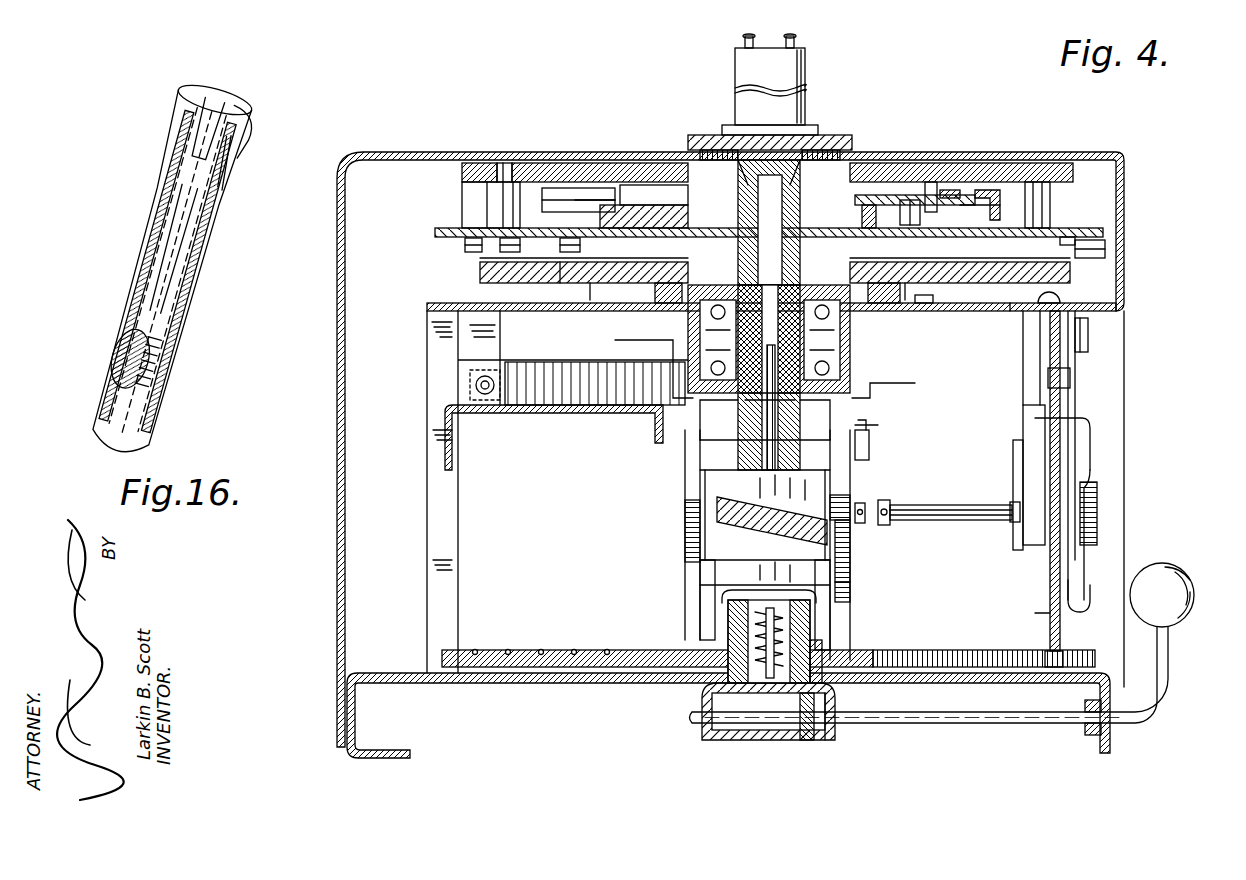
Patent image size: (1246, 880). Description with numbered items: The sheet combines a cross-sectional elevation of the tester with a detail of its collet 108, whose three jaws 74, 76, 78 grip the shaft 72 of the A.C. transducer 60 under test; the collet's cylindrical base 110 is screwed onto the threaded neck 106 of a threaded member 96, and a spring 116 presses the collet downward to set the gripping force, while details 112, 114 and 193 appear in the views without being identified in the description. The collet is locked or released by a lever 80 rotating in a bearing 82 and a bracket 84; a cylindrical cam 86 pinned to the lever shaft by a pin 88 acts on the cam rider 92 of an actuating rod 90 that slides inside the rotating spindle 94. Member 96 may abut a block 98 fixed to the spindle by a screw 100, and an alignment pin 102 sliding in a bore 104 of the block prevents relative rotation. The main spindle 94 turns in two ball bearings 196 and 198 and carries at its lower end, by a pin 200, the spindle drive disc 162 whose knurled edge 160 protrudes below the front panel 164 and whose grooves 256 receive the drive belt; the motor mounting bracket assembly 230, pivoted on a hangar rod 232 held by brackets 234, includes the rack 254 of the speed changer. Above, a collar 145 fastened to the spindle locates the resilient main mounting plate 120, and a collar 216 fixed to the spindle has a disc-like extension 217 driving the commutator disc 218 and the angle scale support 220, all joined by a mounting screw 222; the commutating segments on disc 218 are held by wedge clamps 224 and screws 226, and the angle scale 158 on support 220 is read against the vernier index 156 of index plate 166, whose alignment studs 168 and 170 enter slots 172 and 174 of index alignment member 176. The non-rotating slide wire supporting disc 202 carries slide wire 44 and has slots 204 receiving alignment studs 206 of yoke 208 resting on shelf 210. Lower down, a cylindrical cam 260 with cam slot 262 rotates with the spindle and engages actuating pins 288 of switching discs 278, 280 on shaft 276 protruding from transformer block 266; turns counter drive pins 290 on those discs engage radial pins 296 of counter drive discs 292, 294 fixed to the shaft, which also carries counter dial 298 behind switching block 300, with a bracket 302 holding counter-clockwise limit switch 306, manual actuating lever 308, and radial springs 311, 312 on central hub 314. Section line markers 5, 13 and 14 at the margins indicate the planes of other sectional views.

In FIG. 16, the section line 5 is at (273, 340).
In FIG. 4, the section line 5 is at (1195, 380).
In FIG. 4, the section line 13 is at (360, 227).
In FIG. 16, the section line 14 is at (285, 240).
In FIG. 4, the section line 14 is at (1180, 247).
In FIG. 4, the slide wire 44 is at (485, 266).
In FIG. 4, the A.C. transducer 60 is at (745, 63).
In FIG. 4, the shaft 72 is at (748, 160).
In FIG. 16, the collet jaw 74 is at (262, 118).
In FIG. 4, the collet jaw 74 is at (826, 140).
In FIG. 16, the collet jaw 76 is at (245, 167).
In FIG. 4, the collet jaw 76 is at (738, 150).
In FIG. 16, the collet jaw 78 is at (213, 92).
In FIG. 4, the lever 80 is at (956, 724).
In FIG. 4, the bearing 82 is at (1093, 736).
In FIG. 4, the bracket 84 is at (838, 735).
In FIG. 4, the cylindrical cam 86 is at (742, 740).
In FIG. 4, the pin 88 is at (812, 740).
In FIG. 4, the actuating rod 90 is at (728, 622).
In FIG. 4, the cam rider 92 is at (703, 696).
In FIG. 4, the main spindle 94 is at (835, 625).
In FIG. 4, the threaded member 96 is at (715, 347).
In FIG. 4, the block 98 is at (745, 402).
In FIG. 4, the screw 100 is at (735, 422).
In FIG. 4, the alignment pin 102 is at (822, 400).
In FIG. 4, the bore 104 is at (832, 412).
In FIG. 4, the threaded neck 106 is at (702, 324).
In FIG. 16, the collet 108 is at (133, 234).
In FIG. 4, the collet 108 is at (838, 336).
In FIG. 16, the cylindrical base 110 is at (100, 362).
In FIG. 16, the slot 112 is at (196, 293).
In FIG. 4, the motor flange 114 is at (815, 150).
In FIG. 4, the spring 116 is at (728, 594).
In FIG. 4, the main mounting plate 120 is at (1035, 182).
In FIG. 4, the collar 145 is at (660, 165).
In FIG. 4, the vernier index 156 is at (985, 190).
In FIG. 4, the angle scale 158 is at (560, 152).
In FIG. 4, the knurled edge 160 is at (1098, 660).
In FIG. 4, the spindle drive disc 162 is at (526, 650).
In FIG. 4, the front panel 164 is at (1050, 575).
In FIG. 4, the index plate 166 is at (952, 190).
In FIG. 4, the alignment stud 168 is at (895, 210).
In FIG. 4, the alignment stud 170 is at (625, 210).
In FIG. 4, the slot 172 is at (930, 182).
In FIG. 4, the slot 174 is at (600, 189).
In FIG. 4, the index alignment member 176 is at (880, 195).
In FIG. 4, the cup 193 is at (625, 372).
In FIG. 4, the ball bearing 196 is at (655, 295).
In FIG. 4, the ball bearing 198 is at (852, 367).
In FIG. 4, the pin 200 is at (825, 642).
In FIG. 4, the slide wire supporting disc 202 is at (552, 285).
In FIG. 4, the slots 204 is at (926, 303).
In FIG. 4, the alignment stud 206 is at (612, 311).
In FIG. 4, the alignment yoke 208 is at (590, 302).
In FIG. 4, the shelf 210 is at (448, 303).
In FIG. 4, the collar 216 is at (690, 163).
In FIG. 4, the disc-like extension 217 is at (545, 188).
In FIG. 4, the commutator disc 218 is at (460, 228).
In FIG. 4, the angle scale support 220 is at (575, 206).
In FIG. 4, the mounting screw 222 is at (868, 215).
In FIG. 4, the wedge clamp 224 is at (468, 244).
In FIG. 4, the screw 226 is at (1100, 257).
In FIG. 4, the mounting bracket assembly 230 is at (525, 413).
In FIG. 4, the hangar rod 232 is at (475, 386).
In FIG. 4, the brackets 234 is at (470, 344).
In FIG. 4, the rack 254 is at (685, 427).
In FIG. 4, the grooves 256 is at (476, 650).
In FIG. 4, the cylindrical cam 260 is at (852, 486).
In FIG. 4, the cam slot 262 is at (838, 548).
In FIG. 4, the transformer block 266 is at (715, 500).
In FIG. 4, the shaft 276 is at (952, 505).
In FIG. 4, the switching disc 278 is at (700, 572).
In FIG. 4, the switching disc 280 is at (830, 584).
In FIG. 4, the actuating pins 288 is at (688, 526).
In FIG. 4, the turns counter drive pins 290 is at (869, 446).
In FIG. 4, the turns counter drive disc 292 is at (705, 472).
In FIG. 4, the turns counter drive disc 294 is at (852, 590).
In FIG. 4, the radial pin 296 is at (870, 428).
In FIG. 4, the counter dial 298 is at (1073, 402).
In FIG. 4, the switching block 300 is at (1037, 424).
In FIG. 4, the bracket 302 is at (1013, 446).
In FIG. 4, the counter-clockwise limit switch 306 is at (1020, 526).
In FIG. 4, the manual actuating lever 308 is at (1090, 341).
In FIG. 4, the radial spring 311 is at (1090, 452).
In FIG. 4, the radial spring 312 is at (1085, 563).
In FIG. 4, the central hub 314 is at (1099, 506).